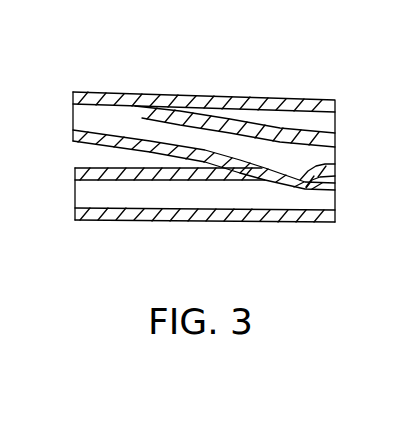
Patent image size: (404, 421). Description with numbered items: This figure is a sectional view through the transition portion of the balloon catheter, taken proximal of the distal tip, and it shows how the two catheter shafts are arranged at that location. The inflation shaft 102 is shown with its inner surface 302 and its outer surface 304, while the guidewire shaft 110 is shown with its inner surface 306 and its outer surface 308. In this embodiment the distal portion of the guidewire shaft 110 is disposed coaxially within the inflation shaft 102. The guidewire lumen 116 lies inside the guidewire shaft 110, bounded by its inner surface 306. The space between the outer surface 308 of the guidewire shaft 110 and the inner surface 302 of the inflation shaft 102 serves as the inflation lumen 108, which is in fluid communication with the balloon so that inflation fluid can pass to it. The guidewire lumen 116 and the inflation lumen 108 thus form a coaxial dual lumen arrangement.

The guidewire shaft 110 is at (100, 93).
The guidewire lumen 116 is at (90, 117).
The outer surface of guidewire shaft 308 is at (260, 127).
The inflation lumen 108 is at (313, 125).
The inner surface of guidewire shaft 306 is at (334, 164).
The inner surface of inflation shaft 302 is at (305, 203).
The outer surface of inflation shaft 304 is at (307, 223).
The inflation shaft 102 is at (120, 222).